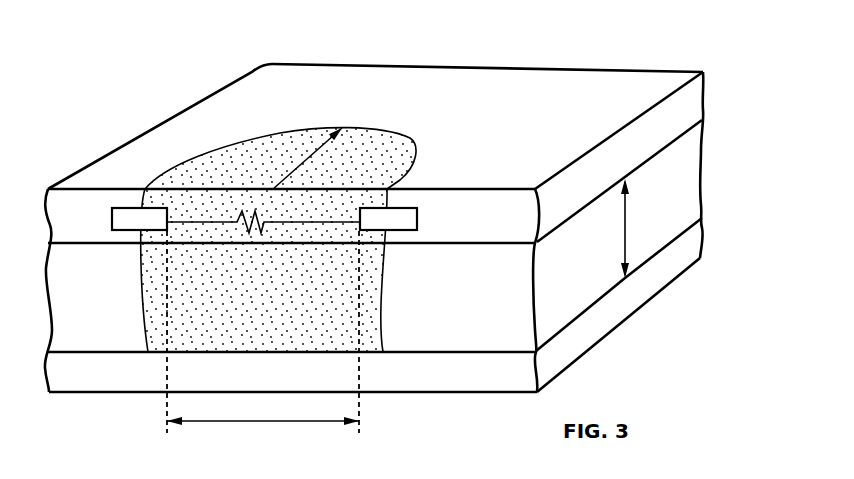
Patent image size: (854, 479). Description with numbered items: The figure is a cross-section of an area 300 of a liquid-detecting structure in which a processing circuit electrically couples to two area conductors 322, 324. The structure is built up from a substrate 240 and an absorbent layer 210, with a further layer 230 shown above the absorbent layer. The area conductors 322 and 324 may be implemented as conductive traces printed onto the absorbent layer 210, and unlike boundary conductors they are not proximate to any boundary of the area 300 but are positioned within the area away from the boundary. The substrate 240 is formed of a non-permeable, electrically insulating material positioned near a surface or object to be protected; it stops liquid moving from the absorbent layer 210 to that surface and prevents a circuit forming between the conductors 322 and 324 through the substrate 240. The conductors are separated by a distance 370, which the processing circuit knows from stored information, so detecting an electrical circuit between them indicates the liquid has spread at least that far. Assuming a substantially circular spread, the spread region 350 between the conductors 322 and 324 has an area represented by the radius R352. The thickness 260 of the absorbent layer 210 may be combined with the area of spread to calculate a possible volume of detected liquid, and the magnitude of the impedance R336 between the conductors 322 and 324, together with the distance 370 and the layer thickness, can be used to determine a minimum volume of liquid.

The area 300 is at (101, 57).
The top layer 230 is at (704, 98).
The absorbent layer 210 is at (703, 168).
The substrate 240 is at (703, 240).
The thickness 260 is at (628, 222).
The doped region 350 is at (416, 142).
The radius R352 is at (322, 158).
The impedance R336 is at (263, 214).
The area conductor 324 is at (112, 221).
The area conductor 322 is at (417, 218).
The distance 370 is at (267, 422).